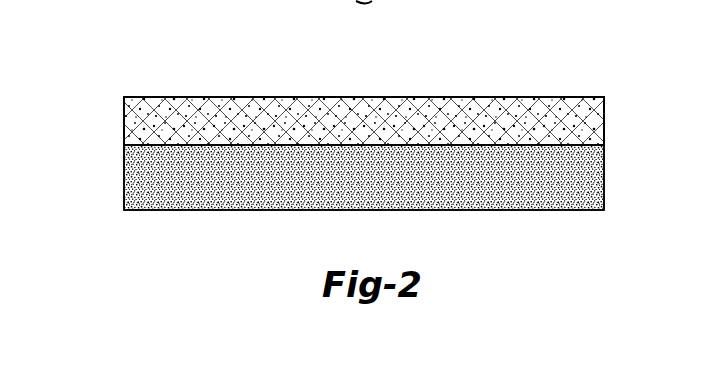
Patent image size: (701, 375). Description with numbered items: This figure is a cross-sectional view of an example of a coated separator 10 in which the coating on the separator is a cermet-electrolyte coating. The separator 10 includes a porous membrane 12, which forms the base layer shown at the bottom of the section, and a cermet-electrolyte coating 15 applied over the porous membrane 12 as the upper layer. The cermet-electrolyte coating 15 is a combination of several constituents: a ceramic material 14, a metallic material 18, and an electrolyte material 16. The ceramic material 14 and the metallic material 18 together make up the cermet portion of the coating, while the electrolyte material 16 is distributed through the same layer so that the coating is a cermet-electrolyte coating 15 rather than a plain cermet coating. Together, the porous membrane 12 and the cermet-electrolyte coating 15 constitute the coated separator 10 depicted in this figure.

The separator 10 is at (110, 26).
The porous membrane 12 is at (124, 190).
The ceramic material 14 is at (387, 111).
The cermet-electrolyte coating 15 is at (124, 122).
The electrolyte material 16 is at (256, 119).
The metallic material 18 is at (387, 111).